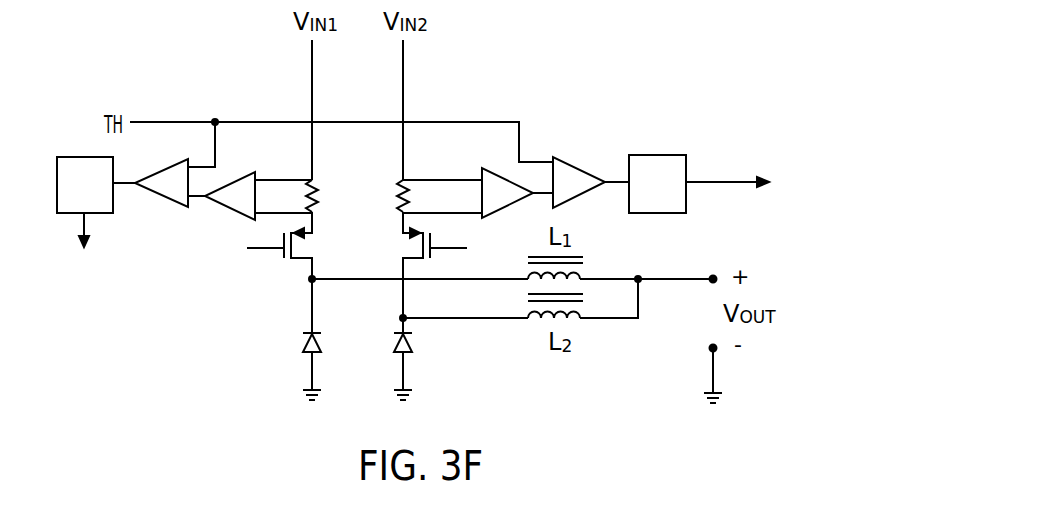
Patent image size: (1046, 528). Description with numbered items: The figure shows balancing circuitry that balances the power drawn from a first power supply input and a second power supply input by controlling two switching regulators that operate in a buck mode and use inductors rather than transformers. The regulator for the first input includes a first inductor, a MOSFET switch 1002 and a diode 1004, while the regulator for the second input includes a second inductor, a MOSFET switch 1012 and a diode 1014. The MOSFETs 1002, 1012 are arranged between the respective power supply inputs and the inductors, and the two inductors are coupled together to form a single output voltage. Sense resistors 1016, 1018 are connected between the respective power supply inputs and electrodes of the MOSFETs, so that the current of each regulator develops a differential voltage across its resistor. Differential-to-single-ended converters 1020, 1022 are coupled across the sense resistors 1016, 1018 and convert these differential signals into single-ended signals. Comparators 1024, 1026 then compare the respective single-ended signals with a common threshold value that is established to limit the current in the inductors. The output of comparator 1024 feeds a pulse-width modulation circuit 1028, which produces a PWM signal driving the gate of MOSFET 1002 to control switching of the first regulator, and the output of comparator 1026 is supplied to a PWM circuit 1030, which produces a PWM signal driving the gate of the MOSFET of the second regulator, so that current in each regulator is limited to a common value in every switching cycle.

The MOSFET switch 1002 is at (290, 265).
The diode 1004 is at (303, 345).
The MOSFET switch 1012 is at (405, 245).
The diode 1014 is at (415, 345).
The sense resistor 1016 is at (315, 180).
The sense resistor 1018 is at (395, 200).
The differential-to-single-ended converter 1020 is at (210, 203).
The differential-to-single-ended converter 1022 is at (480, 172).
The comparator 1024 is at (155, 194).
The comparator 1026 is at (583, 165).
The pulse-width modulation circuit 1028 is at (76, 157).
The PWM circuit 1030 is at (657, 155).